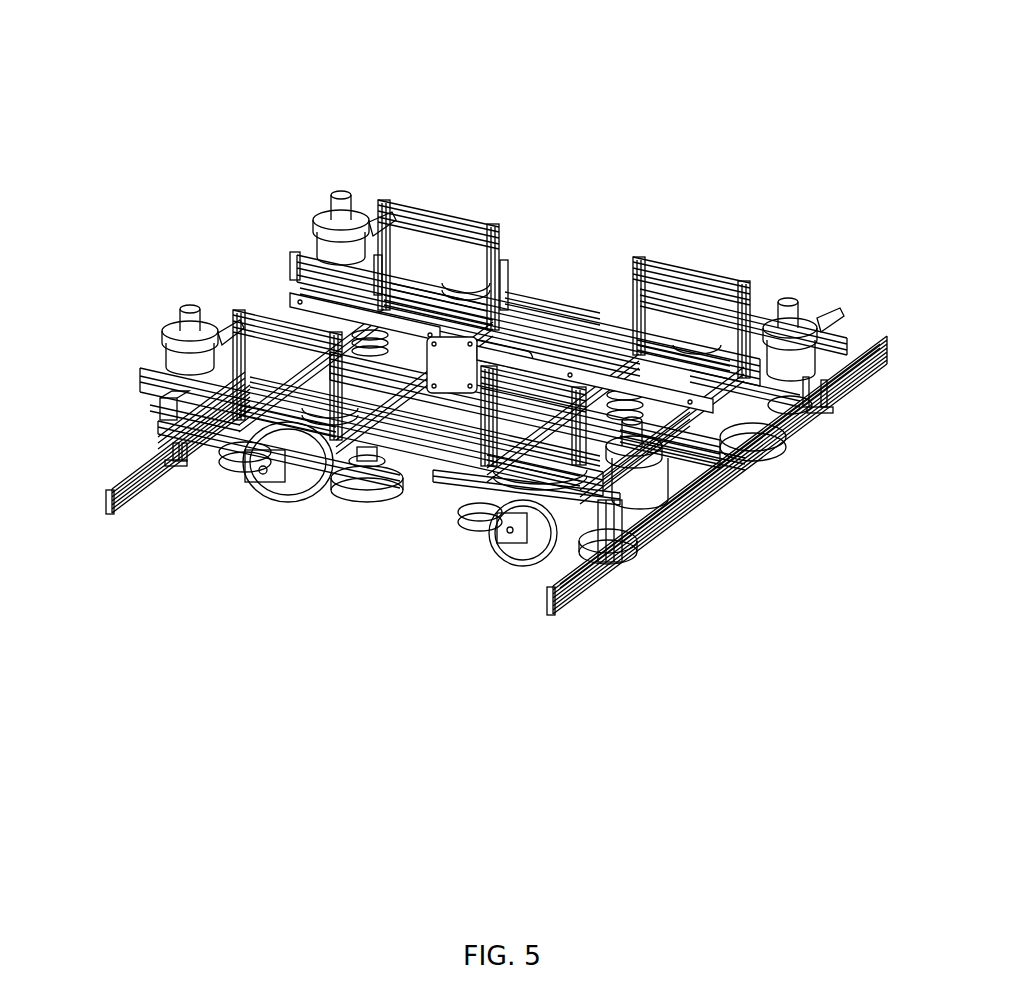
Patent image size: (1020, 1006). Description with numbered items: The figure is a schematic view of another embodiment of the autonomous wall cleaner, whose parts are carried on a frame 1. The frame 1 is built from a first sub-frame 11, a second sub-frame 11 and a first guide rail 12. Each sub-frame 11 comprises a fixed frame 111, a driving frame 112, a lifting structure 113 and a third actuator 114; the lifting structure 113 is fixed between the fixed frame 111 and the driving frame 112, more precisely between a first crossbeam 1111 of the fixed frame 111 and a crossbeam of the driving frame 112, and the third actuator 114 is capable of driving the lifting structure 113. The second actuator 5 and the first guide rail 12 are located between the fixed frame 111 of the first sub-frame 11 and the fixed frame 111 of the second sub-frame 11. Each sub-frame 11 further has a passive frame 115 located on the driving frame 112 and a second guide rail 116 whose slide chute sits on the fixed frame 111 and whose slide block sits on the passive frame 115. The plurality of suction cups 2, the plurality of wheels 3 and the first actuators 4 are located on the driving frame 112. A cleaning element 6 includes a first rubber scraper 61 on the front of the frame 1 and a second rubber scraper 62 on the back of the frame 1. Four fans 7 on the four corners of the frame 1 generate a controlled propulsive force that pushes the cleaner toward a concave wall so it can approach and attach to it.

The frame 1 is at (556, 84).
The sub-frame 11 is at (563, 152).
The fixed frame 111 is at (520, 300).
The driving frame 112 is at (430, 300).
The lifting structure 113 is at (348, 300).
The third actuator 114 is at (388, 300).
The passive frame 115 is at (455, 280).
The second guide rail 116 is at (497, 300).
The first crossbeam 1111 is at (300, 300).
The first guide rail 12 is at (595, 290).
The suction cup 2 is at (357, 493).
The wheel 3 is at (294, 490).
The first actuator 4 is at (775, 450).
The second actuator 5 is at (555, 320).
The cleaning element 6 is at (121, 401).
The first rubber scraper 61 is at (148, 480).
The second rubber scraper 62 is at (598, 590).
The fan 7 is at (167, 333).